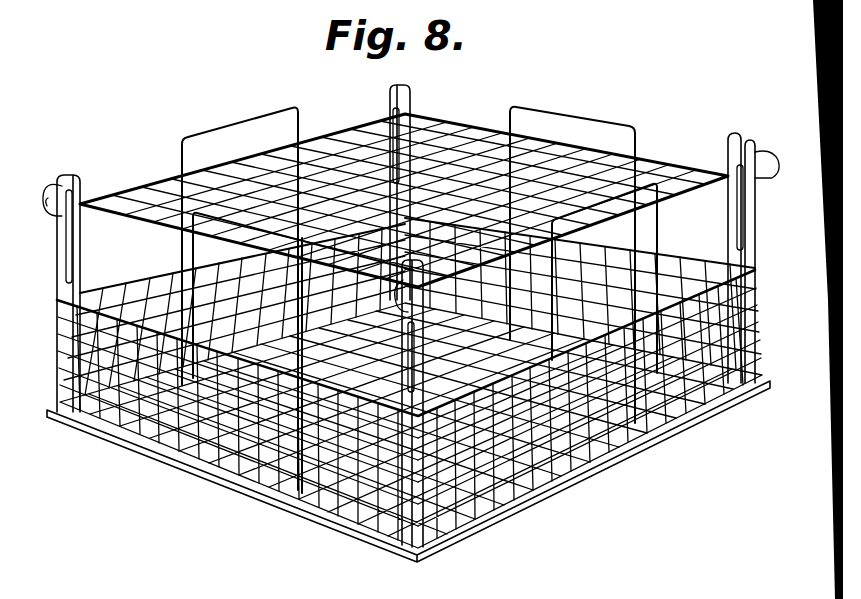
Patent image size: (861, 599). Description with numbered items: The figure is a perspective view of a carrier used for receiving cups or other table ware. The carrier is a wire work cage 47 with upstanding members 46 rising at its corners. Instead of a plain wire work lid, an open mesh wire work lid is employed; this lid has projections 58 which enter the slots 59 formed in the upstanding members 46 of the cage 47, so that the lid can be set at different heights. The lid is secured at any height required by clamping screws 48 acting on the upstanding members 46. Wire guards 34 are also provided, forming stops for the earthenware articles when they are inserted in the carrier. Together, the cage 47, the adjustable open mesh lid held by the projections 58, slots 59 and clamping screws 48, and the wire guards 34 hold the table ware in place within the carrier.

The wire guards 34 is at (258, 112).
The upstanding members 46 is at (391, 103).
The cage 47 is at (303, 509).
The clamping screws 48 is at (48, 190).
The projections 58 is at (124, 200).
The slots 59 is at (67, 272).